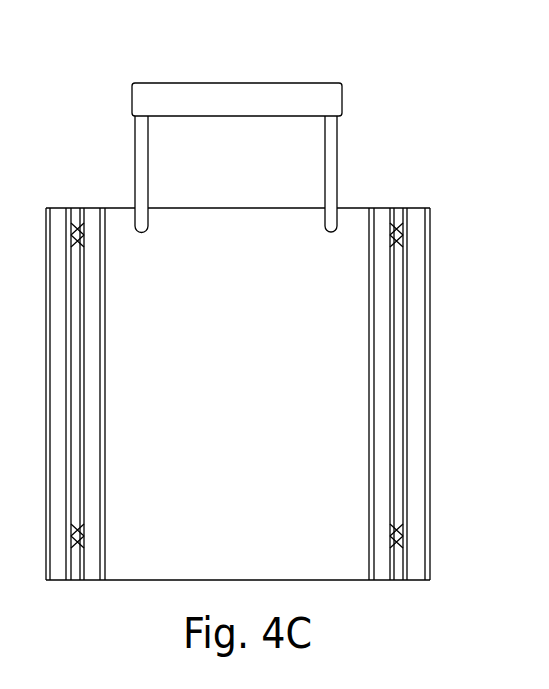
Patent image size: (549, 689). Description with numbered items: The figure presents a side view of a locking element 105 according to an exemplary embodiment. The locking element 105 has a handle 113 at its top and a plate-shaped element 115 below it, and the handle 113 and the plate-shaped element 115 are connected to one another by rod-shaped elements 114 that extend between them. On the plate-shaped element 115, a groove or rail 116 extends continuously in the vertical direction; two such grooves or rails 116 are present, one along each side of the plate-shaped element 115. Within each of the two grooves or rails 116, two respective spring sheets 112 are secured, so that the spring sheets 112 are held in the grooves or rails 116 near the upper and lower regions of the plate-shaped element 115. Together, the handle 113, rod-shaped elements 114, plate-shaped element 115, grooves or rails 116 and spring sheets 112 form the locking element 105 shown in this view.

The locking element 105 is at (258, 290).
The spring sheet 112 is at (80, 240).
The handle 113 is at (232, 97).
The rod-shaped element 114 is at (138, 152).
The plate-shaped element 115 is at (327, 438).
The groove or rail 116 is at (73, 434).